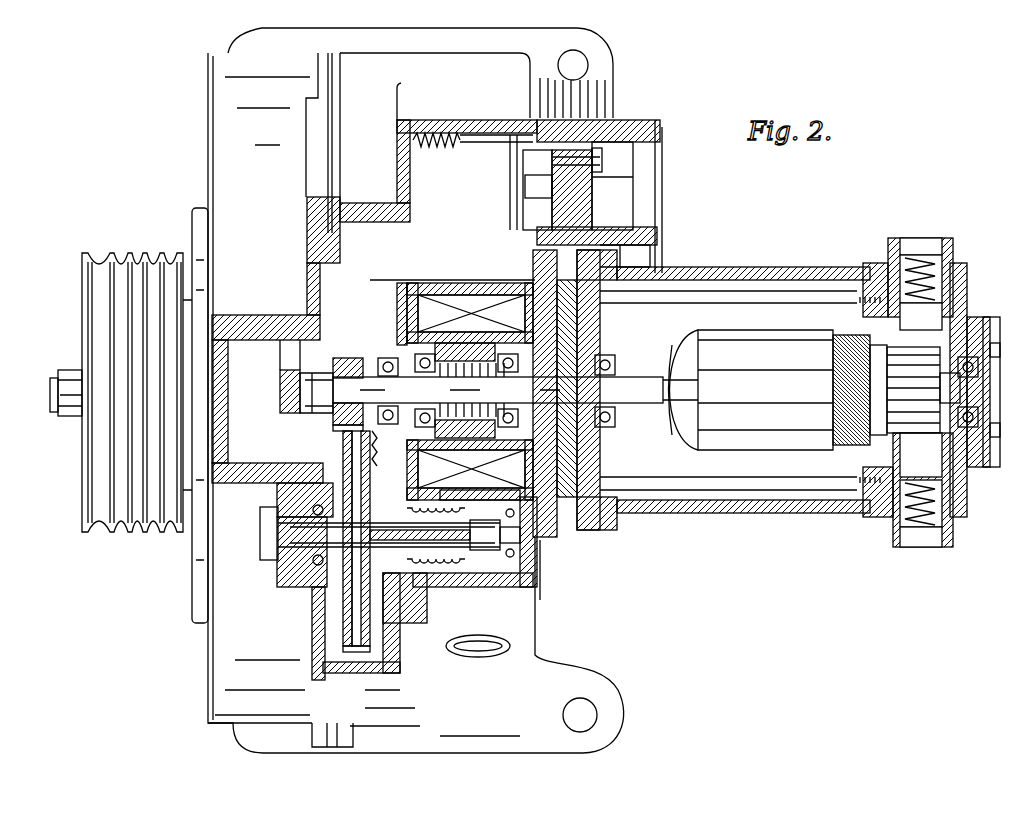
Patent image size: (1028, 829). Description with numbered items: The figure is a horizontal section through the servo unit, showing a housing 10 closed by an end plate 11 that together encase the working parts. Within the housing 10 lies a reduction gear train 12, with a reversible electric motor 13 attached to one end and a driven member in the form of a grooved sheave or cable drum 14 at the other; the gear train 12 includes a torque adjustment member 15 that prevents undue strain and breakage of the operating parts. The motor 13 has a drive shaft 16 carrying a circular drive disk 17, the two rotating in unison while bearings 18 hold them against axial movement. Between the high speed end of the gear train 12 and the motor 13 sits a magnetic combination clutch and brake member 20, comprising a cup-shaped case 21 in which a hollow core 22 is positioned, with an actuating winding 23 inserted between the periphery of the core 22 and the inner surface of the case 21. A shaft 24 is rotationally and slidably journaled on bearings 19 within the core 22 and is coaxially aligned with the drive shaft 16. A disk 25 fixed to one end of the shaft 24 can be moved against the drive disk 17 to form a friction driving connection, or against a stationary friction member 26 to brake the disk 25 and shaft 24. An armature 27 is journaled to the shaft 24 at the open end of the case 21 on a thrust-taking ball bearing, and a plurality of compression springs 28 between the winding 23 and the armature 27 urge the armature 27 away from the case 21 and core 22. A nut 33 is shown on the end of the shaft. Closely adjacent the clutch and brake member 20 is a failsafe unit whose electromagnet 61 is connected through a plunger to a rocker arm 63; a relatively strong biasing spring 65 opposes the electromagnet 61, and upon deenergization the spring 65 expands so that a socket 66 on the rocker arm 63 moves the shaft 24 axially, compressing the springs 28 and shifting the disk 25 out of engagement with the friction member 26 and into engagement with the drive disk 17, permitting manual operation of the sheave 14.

The housing 10 is at (445, 60).
The end plate 11 is at (222, 118).
The reduction gear train 12 is at (333, 428).
The reversible electric motor 13 is at (776, 512).
The grooved sheave or cable drum 14 is at (143, 505).
The torque adjustment member 15 is at (345, 603).
The drive shaft 16 is at (648, 395).
The circular drive disk 17 is at (600, 515).
The bearings 18 is at (612, 362).
The bearings 19 is at (498, 390).
The combination clutch and brake member 20 is at (462, 270).
The cup-shaped case 21 is at (425, 282).
The hollow core 22 is at (400, 348).
The actuating winding 23 is at (443, 312).
The shaft 24 is at (368, 382).
The disk 25 is at (583, 528).
The stationary friction member 26 is at (555, 530).
The armature 27 is at (398, 440).
The compression springs 28 is at (397, 303).
The nut 33 is at (50, 398).
The electromagnet 61 is at (486, 162).
The rocker arm 63 is at (280, 355).
The biasing spring 65 is at (434, 136).
The socket 66 is at (312, 372).